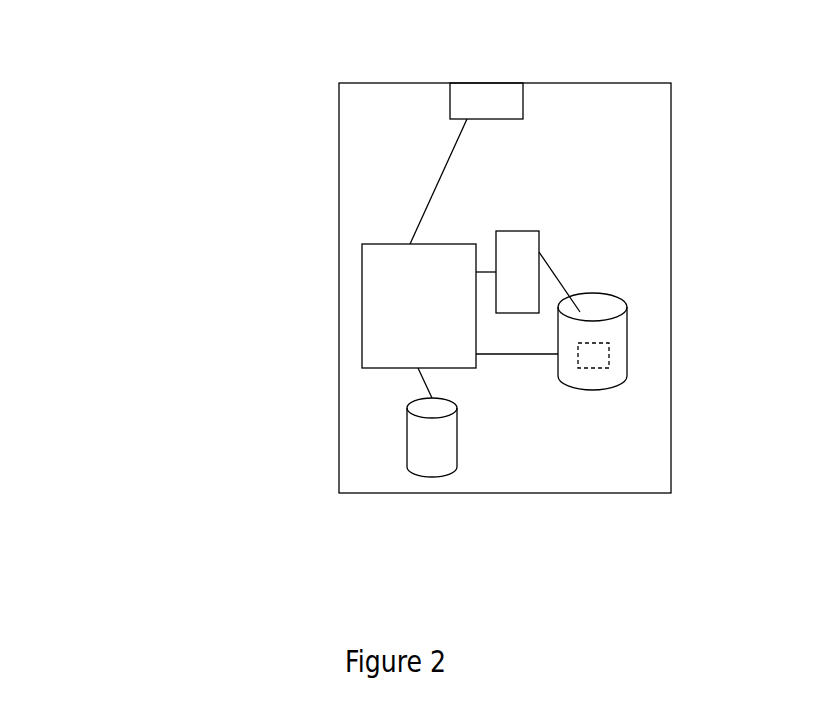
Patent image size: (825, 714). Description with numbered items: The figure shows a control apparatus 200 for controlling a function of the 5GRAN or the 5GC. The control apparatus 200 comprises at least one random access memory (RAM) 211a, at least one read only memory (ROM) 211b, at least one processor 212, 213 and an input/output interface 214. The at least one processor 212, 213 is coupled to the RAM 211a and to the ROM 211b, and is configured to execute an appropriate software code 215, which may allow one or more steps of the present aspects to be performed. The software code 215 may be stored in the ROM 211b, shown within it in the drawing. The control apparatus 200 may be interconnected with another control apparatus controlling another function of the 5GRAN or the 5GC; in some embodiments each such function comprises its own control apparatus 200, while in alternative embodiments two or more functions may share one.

The control apparatus 200 is at (322, 76).
The random access memory (RAM) 211a is at (407, 433).
The read only memory (ROM) 211b is at (627, 377).
The processor 212 is at (362, 332).
The processor 213 is at (508, 252).
The input/output interface 214 is at (492, 101).
The software code 215 is at (605, 347).